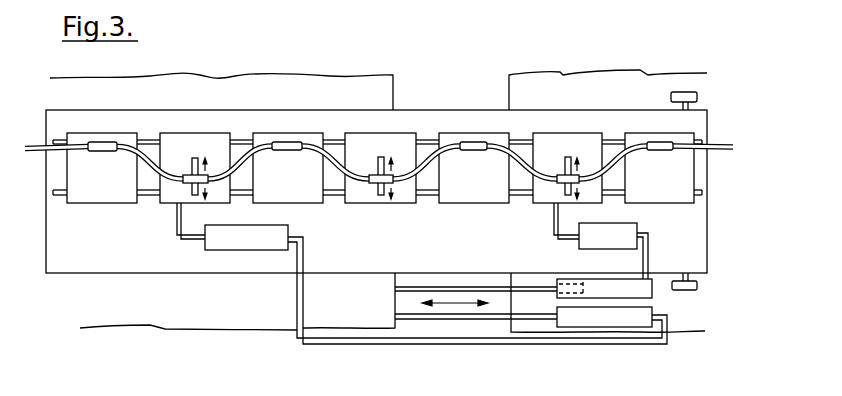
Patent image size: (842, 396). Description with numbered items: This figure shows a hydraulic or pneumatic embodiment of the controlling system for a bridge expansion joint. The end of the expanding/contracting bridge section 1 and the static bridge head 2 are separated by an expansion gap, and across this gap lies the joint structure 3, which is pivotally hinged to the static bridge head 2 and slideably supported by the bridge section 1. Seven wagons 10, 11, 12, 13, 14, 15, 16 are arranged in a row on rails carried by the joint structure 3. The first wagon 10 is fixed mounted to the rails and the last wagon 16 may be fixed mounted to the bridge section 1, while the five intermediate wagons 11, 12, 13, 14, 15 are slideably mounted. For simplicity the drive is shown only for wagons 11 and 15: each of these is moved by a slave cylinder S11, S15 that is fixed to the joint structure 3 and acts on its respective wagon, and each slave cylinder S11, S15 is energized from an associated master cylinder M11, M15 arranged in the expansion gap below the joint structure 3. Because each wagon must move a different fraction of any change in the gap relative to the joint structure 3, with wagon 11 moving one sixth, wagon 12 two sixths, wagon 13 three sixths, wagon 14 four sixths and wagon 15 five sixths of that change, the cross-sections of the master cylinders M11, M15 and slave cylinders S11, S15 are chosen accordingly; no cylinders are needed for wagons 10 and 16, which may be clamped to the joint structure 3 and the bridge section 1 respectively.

The expanding/contracting bridge section 1 is at (232, 311).
The static bridge head 2 is at (608, 98).
The joint structure 3 is at (440, 268).
The first wagon 10 is at (659, 168).
The wagon 11 is at (567, 168).
The wagon 12 is at (474, 168).
The wagon 13 is at (380, 168).
The wagon 14 is at (288, 168).
The wagon 15 is at (195, 168).
The last wagon 16 is at (102, 168).
The slave cylinder S11 is at (584, 243).
The slave cylinder S15 is at (210, 245).
The master cylinder M11 is at (645, 291).
The master cylinder M15 is at (636, 318).